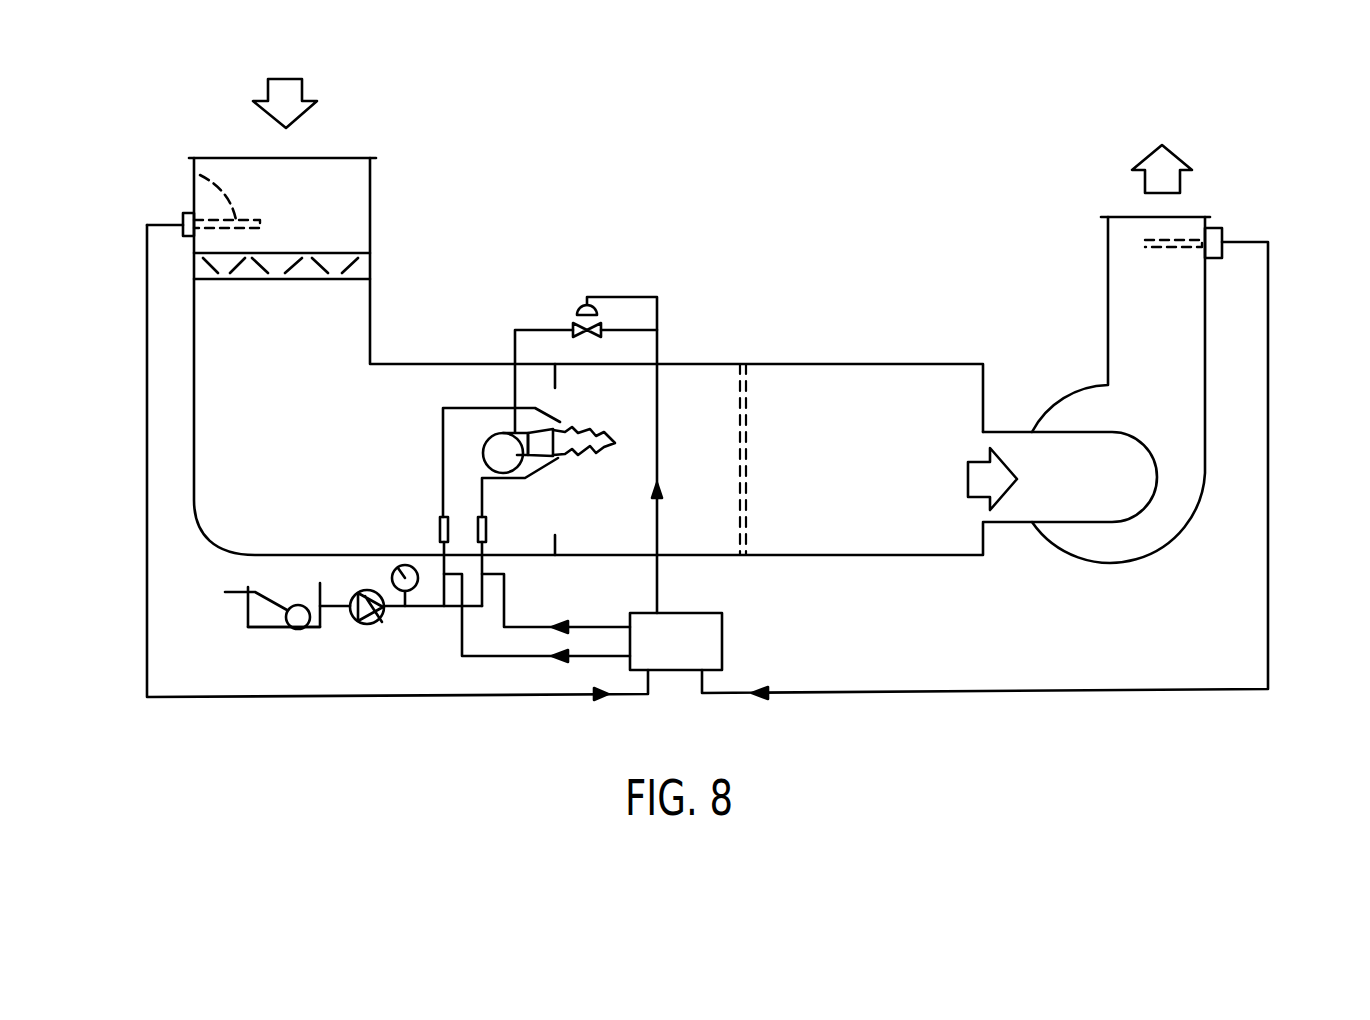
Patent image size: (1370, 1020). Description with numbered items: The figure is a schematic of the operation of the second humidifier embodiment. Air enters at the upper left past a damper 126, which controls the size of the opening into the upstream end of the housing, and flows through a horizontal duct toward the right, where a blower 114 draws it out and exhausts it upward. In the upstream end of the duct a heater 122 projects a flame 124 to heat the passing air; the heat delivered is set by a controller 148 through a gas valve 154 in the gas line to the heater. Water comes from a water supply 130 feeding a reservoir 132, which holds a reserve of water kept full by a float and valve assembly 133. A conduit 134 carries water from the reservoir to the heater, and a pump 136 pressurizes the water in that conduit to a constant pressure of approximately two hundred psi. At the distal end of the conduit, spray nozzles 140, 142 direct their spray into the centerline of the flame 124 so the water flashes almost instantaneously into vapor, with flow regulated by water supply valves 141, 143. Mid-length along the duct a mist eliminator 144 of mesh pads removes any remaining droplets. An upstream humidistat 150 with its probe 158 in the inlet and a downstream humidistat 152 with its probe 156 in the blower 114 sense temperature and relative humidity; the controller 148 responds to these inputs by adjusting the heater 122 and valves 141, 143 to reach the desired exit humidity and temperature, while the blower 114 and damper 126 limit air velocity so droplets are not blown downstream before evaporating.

The blower 114 is at (1178, 445).
The heater 122 is at (497, 447).
The flame 124 is at (596, 438).
The damper 126 is at (347, 253).
The water supply 130 is at (272, 595).
The reservoir 132 is at (262, 618).
The float and valve assembly 133 is at (298, 630).
The conduit 134 is at (427, 607).
The pump 136 is at (375, 622).
The spray nozzle 140 is at (555, 417).
The water supply valve 141 is at (440, 530).
The spray nozzle 142 is at (548, 462).
The water supply valve 143 is at (490, 528).
The mist eliminator 144 is at (748, 433).
The controller 148 is at (710, 633).
The upstream humidistat 150 is at (184, 222).
The downstream humidistat 152 is at (1223, 242).
The gas valve 154 is at (573, 330).
The probe 156 is at (1192, 232).
The inlet probe 158 is at (193, 170).